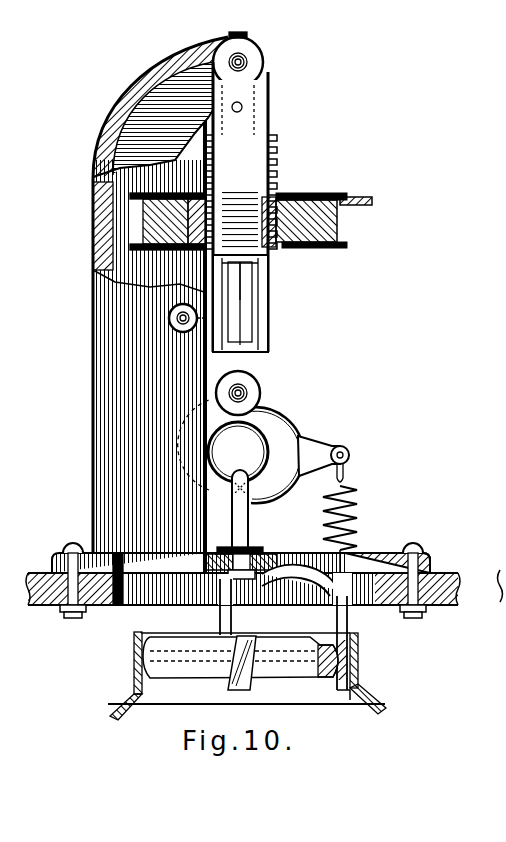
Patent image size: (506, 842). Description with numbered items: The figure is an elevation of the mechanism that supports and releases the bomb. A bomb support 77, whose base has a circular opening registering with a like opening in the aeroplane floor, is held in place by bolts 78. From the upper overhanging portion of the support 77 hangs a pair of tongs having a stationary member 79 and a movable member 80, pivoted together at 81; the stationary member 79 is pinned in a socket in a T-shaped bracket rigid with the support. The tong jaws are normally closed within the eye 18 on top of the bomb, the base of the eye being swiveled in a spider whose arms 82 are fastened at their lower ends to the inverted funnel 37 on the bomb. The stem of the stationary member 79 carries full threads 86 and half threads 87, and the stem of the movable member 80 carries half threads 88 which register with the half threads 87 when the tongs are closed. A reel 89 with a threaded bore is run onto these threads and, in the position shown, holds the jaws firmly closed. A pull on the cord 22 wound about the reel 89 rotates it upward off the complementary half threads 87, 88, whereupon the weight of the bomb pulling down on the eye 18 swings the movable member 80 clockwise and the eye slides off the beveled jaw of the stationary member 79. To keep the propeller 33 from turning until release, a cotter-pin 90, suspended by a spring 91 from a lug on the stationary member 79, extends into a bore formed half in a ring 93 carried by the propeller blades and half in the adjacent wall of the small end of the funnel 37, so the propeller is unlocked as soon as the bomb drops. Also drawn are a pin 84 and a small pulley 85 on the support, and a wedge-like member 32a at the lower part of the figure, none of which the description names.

The eye 18 is at (244, 520).
The cord 22 is at (372, 199).
The wedge member 32a is at (244, 688).
The propeller 33 is at (82, 704).
The inverted funnel 37 is at (124, 698).
The bomb support 77 is at (112, 362).
The bolts 78 is at (70, 548).
The stationary member 79 is at (262, 140).
The movable member 80 is at (296, 312).
The pivot 81 is at (242, 390).
The arms 82 is at (229, 612).
The pin 84 is at (208, 302).
The pulley 85 is at (172, 316).
The full threads 86 is at (265, 163).
The half threads 87 is at (102, 170).
The half threads 88 is at (306, 197).
The reel 89 is at (348, 245).
The cotter-pin 90 is at (342, 607).
The spring 91 is at (346, 488).
The ring 93 is at (138, 656).